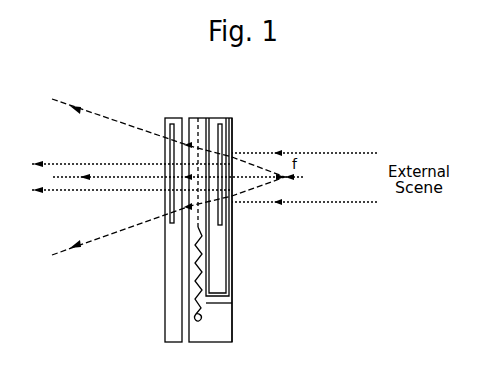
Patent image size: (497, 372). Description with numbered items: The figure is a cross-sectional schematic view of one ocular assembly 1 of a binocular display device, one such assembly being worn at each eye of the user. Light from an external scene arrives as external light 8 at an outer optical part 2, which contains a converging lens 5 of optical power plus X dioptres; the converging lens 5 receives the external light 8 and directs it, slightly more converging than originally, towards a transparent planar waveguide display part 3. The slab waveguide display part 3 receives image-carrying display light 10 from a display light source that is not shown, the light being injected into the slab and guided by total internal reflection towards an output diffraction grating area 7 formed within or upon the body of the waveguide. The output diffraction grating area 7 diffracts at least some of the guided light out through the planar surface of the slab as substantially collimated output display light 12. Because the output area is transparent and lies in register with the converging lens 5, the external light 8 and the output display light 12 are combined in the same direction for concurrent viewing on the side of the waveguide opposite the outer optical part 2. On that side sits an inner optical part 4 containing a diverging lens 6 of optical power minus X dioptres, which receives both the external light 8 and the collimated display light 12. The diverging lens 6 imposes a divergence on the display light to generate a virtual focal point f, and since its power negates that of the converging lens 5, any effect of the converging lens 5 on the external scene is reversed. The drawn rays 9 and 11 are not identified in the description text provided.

The ocular assembly 1 is at (222, 203).
The outer optical part 2 is at (239, 184).
The transparent planar waveguide display part 3 is at (228, 203).
The inner optical part 4 is at (150, 217).
The converging lens 5 is at (233, 133).
The diverging lens 6 is at (172, 136).
The output diffraction grating area 7 is at (212, 118).
The external light 8 is at (342, 151).
The divergent light rays 9 is at (112, 118).
The image/information-carrying light 10 is at (203, 317).
The parallel light rays 11 is at (68, 162).
The output display light 12 is at (185, 118).